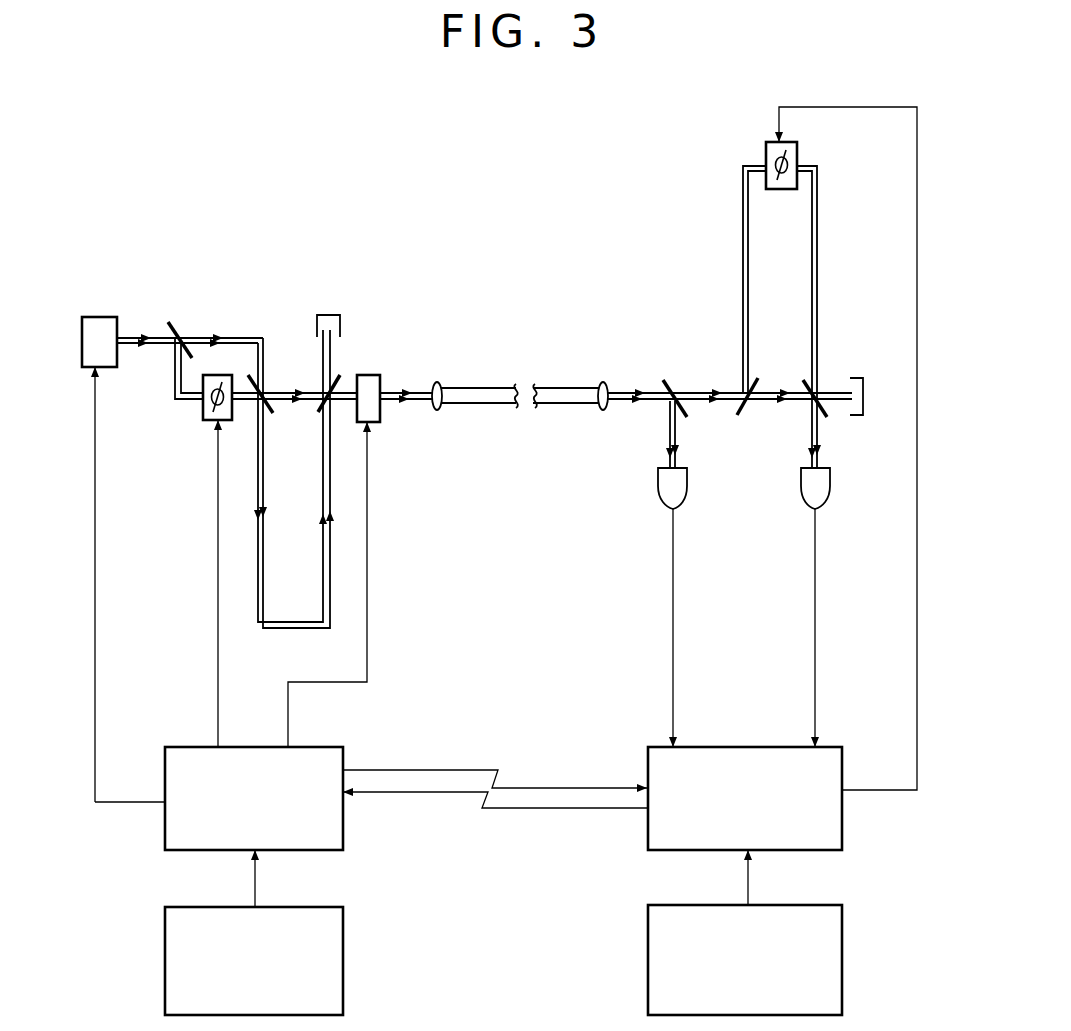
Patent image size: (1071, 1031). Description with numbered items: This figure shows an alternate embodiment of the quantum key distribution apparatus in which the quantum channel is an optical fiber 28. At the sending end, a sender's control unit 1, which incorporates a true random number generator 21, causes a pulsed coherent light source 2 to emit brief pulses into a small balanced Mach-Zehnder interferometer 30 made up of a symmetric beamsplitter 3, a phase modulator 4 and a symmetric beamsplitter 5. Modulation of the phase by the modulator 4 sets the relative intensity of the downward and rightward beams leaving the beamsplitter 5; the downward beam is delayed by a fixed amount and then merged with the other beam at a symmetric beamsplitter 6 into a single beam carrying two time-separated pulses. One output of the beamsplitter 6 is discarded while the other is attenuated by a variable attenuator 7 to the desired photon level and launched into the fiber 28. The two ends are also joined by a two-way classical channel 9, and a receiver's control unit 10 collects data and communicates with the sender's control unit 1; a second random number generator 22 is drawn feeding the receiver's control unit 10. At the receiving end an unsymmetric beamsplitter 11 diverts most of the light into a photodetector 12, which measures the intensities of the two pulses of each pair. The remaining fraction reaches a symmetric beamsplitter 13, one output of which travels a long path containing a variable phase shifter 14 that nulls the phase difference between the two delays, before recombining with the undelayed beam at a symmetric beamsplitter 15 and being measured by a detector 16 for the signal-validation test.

The sender's control unit 1 is at (176, 826).
The pulsed coherent light source 2 is at (100, 317).
The symmetric beamsplitter 3 is at (174, 328).
The phase modulator 4 is at (204, 412).
The symmetric beamsplitter 5 is at (274, 414).
The symmetric beamsplitter 6 is at (340, 378).
The variable attenuator 7 is at (375, 376).
The two-way classical channel 9 is at (495, 771).
The receiver's control unit 10 is at (830, 832).
The unsymmetric beamsplitter 11 is at (673, 378).
The photodetector 12 is at (681, 488).
The symmetric beamsplitter 13 is at (740, 410).
The variable phase shifter 14 is at (770, 153).
The symmetric beamsplitter 15 is at (808, 385).
The detector 16 is at (822, 482).
The true random number generator 21 is at (175, 953).
The random number generator 22 is at (835, 968).
The optical fiber 28 is at (495, 403).
The Mach-Zehnder interferometer 30 is at (249, 338).